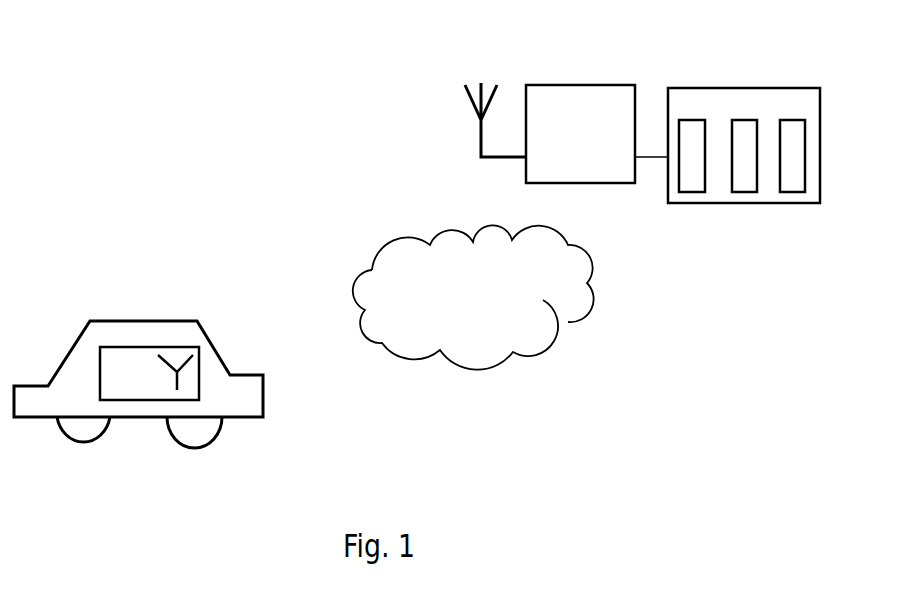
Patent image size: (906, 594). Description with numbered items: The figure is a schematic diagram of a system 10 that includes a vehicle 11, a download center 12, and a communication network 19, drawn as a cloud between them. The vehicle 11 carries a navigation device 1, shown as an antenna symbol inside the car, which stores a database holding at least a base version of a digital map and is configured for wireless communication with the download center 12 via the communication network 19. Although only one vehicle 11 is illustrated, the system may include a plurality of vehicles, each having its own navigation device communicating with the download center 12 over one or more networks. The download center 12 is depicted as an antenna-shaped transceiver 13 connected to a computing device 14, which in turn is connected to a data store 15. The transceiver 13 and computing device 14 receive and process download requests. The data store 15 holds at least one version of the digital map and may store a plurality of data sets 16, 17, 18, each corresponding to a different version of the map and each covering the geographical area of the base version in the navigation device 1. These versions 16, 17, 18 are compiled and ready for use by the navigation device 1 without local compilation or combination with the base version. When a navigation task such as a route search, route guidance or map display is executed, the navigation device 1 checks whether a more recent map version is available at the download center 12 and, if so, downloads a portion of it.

The system 10 is at (77, 100).
The navigation device 1 is at (197, 362).
The vehicle 11 is at (263, 382).
The download center 12 is at (452, 118).
The transceiver 13 is at (481, 146).
The computing device 14 is at (607, 85).
The data store 15 is at (790, 88).
The data set 16 is at (698, 190).
The data set 17 is at (749, 190).
The data set 18 is at (798, 190).
The communication network 19 is at (594, 296).